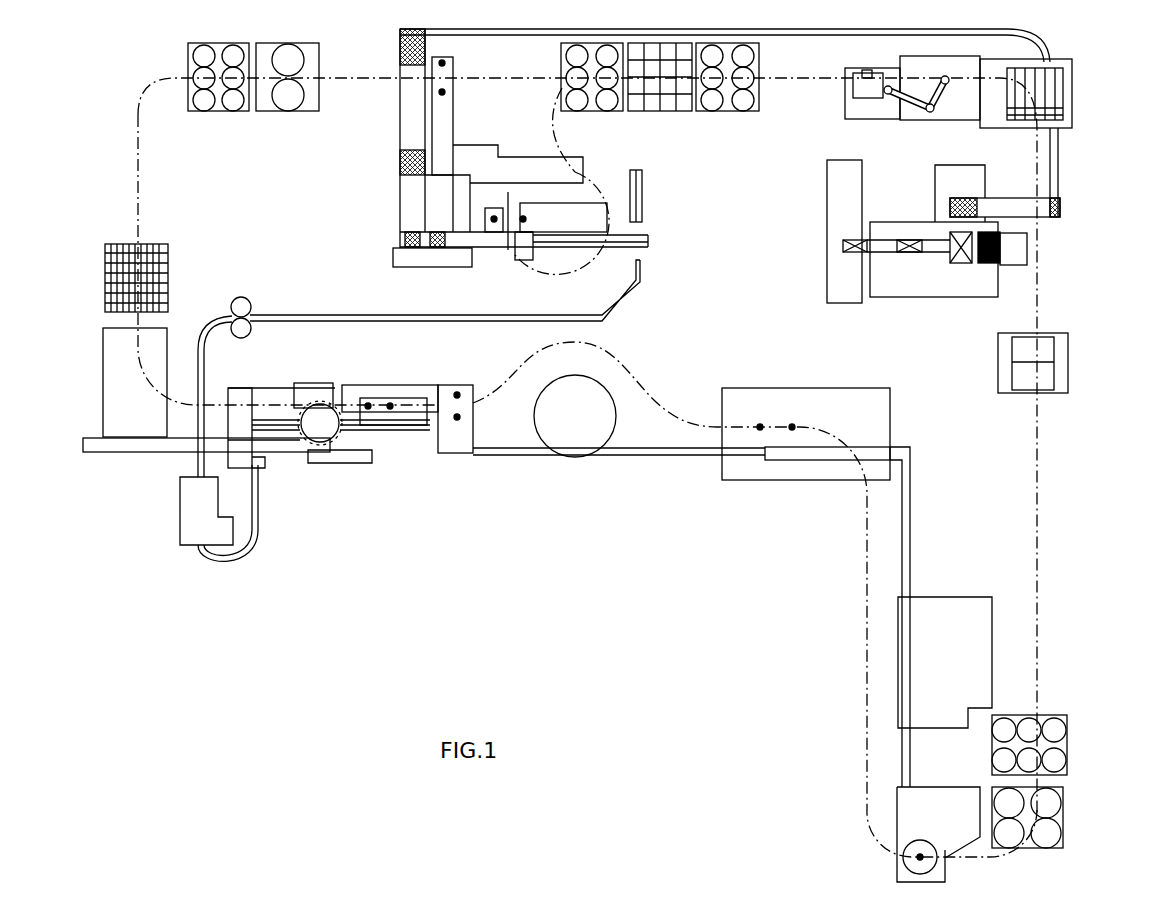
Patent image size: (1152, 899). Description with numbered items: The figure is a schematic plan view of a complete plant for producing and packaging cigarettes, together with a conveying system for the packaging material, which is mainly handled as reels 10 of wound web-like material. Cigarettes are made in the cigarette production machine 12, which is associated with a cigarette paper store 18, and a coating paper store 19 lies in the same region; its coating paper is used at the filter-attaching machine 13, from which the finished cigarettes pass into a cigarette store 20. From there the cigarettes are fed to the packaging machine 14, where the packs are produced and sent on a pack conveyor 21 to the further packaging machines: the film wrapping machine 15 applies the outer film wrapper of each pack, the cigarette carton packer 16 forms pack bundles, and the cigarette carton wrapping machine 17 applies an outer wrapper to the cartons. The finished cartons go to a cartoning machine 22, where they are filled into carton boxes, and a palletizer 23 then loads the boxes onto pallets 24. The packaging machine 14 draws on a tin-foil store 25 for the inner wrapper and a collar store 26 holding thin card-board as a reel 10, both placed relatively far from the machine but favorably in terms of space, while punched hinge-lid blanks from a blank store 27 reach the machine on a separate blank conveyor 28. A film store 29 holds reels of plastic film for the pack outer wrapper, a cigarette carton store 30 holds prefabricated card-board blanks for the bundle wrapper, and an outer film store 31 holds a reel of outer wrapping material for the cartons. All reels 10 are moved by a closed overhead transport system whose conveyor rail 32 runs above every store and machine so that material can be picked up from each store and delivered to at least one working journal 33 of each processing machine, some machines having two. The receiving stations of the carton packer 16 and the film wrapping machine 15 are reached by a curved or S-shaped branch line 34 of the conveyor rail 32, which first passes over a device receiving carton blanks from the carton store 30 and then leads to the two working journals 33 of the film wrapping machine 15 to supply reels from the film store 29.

The reel 10 is at (232, 60).
The cigarette production machine 12 is at (978, 657).
The filter-attaching machine 13 is at (758, 481).
The packaging machine 14 is at (414, 462).
The film wrapping machine 15 is at (650, 240).
The cigarette carton packer 16 is at (438, 208).
The cigarette carton wrapping machine 17 is at (440, 118).
The cigarette paper store 18 is at (1065, 815).
The coating paper store 19 is at (1068, 745).
The cigarette store 20 is at (575, 437).
The pack conveyor 21 is at (330, 322).
The cartoning machine 22 is at (985, 290).
The palletizer 23 is at (955, 122).
The pallet 24 is at (1073, 78).
The tin-foil store 25 is at (180, 112).
The collar store 26 is at (268, 112).
The blank store 27 is at (100, 287).
The blank conveyor 28 is at (145, 453).
The film store 29 is at (725, 112).
The cigarette carton store 30 is at (660, 112).
The outer film store 31 is at (598, 40).
The conveyor rail 32 is at (865, 600).
The working journal 33 is at (494, 222).
The branch line 34 is at (550, 138).